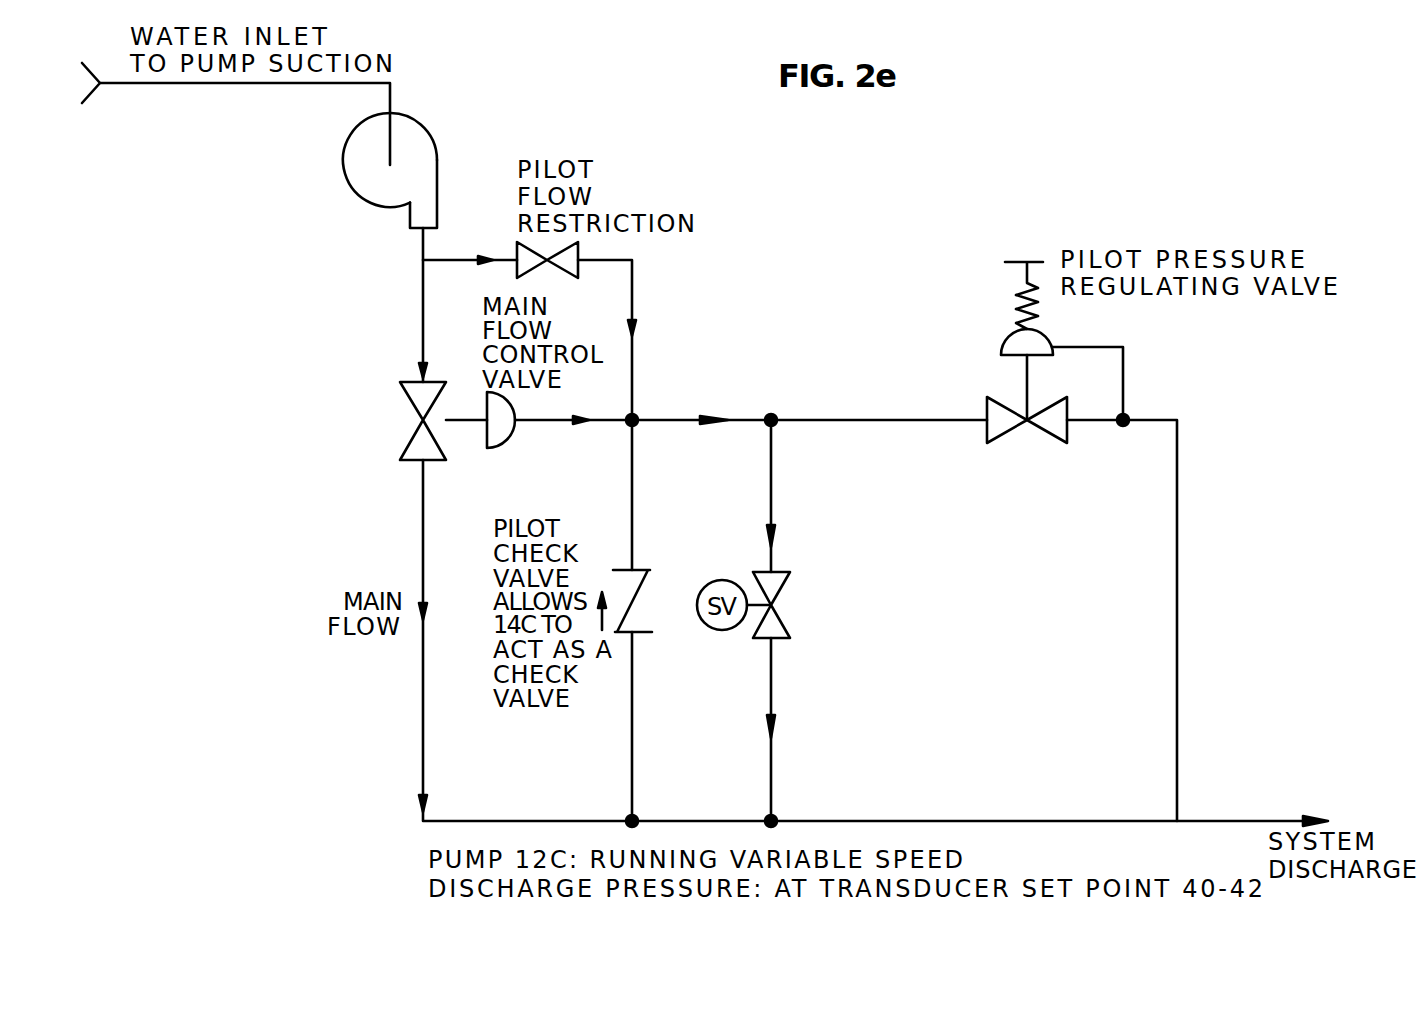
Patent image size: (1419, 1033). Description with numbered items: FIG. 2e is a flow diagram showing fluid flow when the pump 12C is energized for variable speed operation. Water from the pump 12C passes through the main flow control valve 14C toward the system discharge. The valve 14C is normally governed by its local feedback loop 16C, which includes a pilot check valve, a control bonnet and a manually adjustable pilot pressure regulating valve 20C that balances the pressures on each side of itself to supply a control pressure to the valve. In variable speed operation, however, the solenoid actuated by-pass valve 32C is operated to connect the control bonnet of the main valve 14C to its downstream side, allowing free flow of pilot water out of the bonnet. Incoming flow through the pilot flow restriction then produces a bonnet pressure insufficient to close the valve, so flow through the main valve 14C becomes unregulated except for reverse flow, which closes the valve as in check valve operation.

The pump 12C is at (368, 170).
The main flow control valve 14C is at (408, 421).
The local feedback loop 16C is at (646, 695).
The pilot pressure regulating valve 20C is at (1055, 363).
The solenoid actuated by-pass valve 32C is at (795, 620).